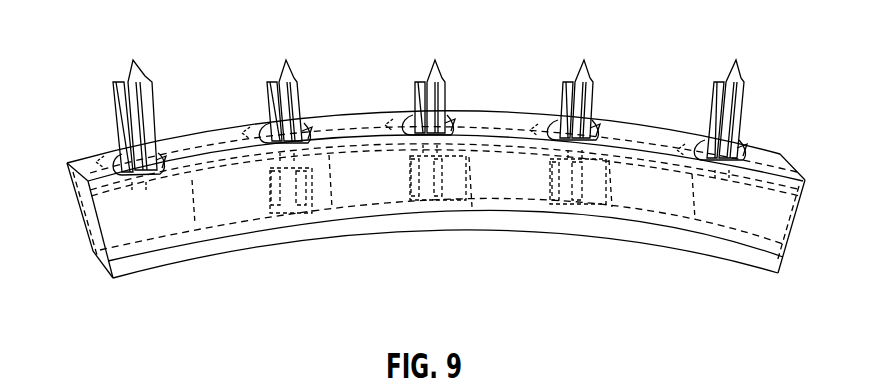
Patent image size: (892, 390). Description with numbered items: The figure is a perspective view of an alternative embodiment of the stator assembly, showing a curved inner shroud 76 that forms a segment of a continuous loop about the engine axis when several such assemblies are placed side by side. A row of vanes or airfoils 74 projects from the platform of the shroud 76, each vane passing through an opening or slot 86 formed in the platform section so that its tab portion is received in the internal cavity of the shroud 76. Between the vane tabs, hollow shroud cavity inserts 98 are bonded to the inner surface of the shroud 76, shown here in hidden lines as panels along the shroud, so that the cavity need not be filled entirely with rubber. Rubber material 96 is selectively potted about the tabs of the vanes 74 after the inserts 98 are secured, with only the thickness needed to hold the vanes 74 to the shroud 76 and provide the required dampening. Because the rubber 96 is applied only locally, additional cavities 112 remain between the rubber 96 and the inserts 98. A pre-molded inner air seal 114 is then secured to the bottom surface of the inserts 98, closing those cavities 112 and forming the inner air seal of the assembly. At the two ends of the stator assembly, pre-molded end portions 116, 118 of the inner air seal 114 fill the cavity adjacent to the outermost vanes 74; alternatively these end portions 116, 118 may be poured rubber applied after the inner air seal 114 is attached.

The vanes or airfoils 74 is at (143, 107).
The inner shroud 76 is at (79, 161).
The opening or slot 86 is at (267, 125).
The rubber material 96 is at (317, 160).
The shroud cavity inserts 98 is at (337, 130).
The cavities 112 is at (312, 200).
The pre-molded inner air seal 114 is at (445, 215).
The pre-molded end portion 116 is at (90, 228).
The pre-molded end portion 118 is at (747, 190).